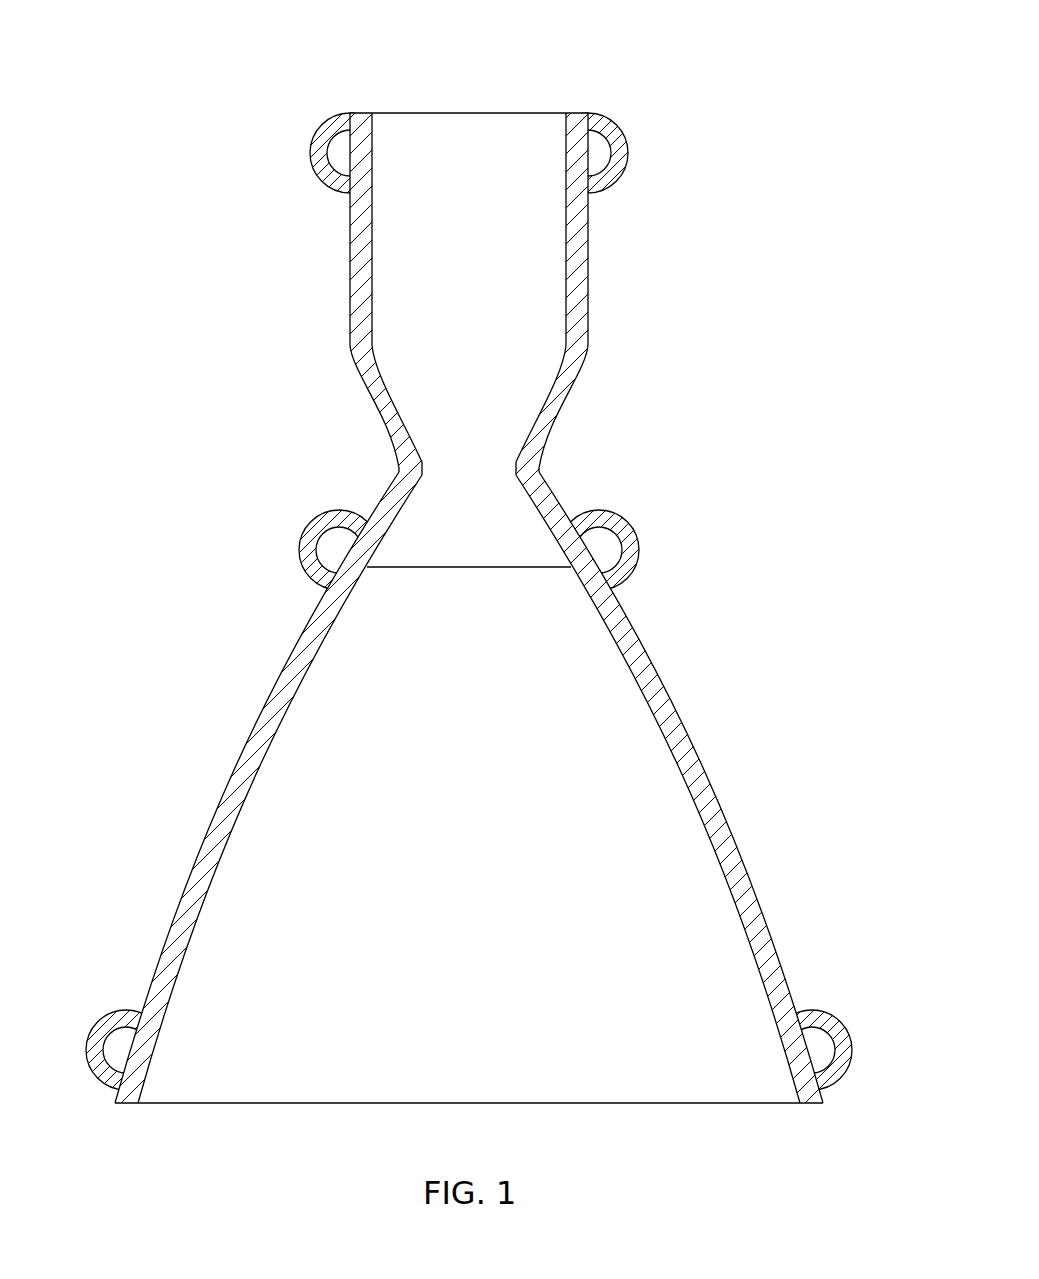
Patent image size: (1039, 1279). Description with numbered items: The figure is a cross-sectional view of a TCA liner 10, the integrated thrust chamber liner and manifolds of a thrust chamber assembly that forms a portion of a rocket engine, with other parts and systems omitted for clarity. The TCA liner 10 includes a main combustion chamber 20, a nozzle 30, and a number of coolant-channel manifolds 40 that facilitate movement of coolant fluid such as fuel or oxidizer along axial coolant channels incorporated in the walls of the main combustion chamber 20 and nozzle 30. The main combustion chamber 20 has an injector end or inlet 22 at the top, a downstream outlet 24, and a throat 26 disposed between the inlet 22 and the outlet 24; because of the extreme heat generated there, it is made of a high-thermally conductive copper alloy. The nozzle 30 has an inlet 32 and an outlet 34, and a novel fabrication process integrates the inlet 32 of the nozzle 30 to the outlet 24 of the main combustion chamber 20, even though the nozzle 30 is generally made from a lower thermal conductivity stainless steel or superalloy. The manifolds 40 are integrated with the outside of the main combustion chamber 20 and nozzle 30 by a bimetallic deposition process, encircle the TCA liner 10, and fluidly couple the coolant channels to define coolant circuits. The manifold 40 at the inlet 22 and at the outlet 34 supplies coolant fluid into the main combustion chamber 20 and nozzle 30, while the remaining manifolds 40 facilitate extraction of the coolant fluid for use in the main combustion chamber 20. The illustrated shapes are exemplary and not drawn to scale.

The TCA liner 10 is at (487, 606).
The main combustion chamber 20 is at (552, 300).
The inlet 22 is at (477, 112).
The outlet 24 is at (463, 567).
The throat 26 is at (539, 473).
The nozzle 30 is at (485, 836).
The inlet 32 is at (417, 568).
The outlet 34 is at (543, 1103).
The coolant-channel manifolds 40 is at (311, 153).